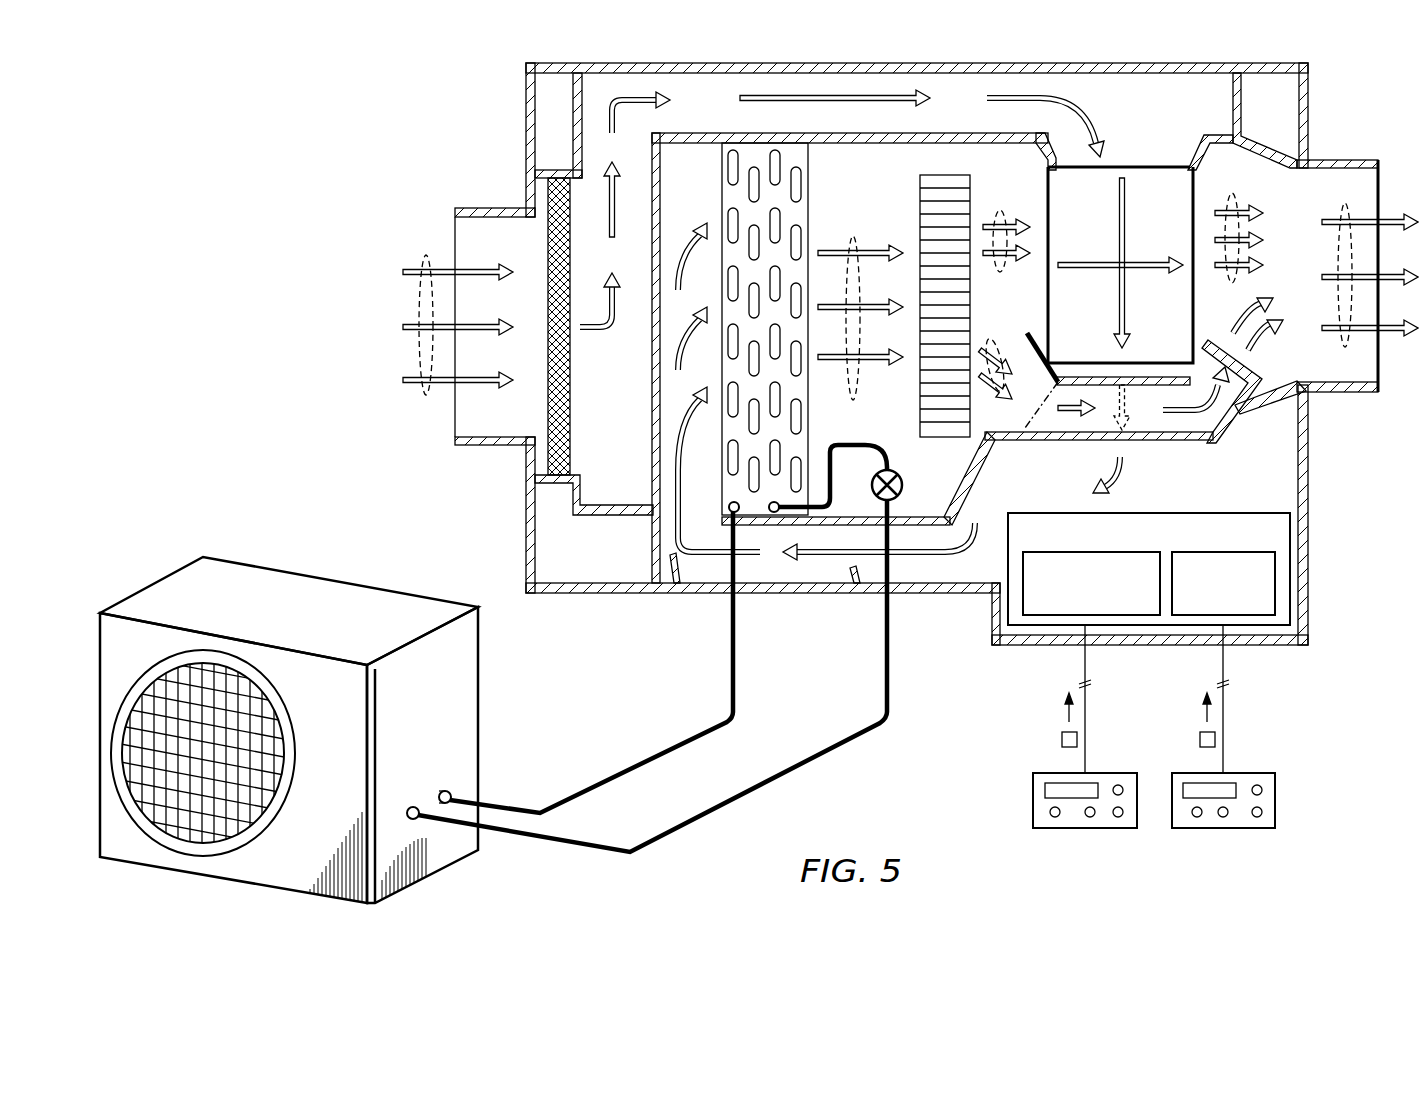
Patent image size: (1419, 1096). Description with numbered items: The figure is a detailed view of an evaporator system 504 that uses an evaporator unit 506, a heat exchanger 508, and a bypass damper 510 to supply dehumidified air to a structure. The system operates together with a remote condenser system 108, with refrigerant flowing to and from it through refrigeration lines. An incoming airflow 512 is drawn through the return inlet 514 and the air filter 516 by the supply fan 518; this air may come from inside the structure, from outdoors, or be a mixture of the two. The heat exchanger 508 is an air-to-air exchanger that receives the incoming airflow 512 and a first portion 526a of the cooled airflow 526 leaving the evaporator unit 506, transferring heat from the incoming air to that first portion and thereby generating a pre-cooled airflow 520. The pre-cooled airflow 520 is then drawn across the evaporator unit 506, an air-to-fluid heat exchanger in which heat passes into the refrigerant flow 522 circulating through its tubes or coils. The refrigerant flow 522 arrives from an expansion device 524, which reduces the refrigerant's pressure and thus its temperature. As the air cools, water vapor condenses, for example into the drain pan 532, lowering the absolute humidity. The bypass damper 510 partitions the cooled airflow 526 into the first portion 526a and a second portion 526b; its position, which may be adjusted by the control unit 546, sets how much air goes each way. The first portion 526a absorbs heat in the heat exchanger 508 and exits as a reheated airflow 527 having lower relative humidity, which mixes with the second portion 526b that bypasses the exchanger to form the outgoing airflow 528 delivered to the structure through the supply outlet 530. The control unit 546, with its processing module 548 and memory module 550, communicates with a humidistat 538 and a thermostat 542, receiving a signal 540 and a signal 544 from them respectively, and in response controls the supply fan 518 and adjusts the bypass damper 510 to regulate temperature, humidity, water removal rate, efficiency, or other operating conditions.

The remote condenser system 108 is at (226, 550).
The evaporator system 504 is at (520, 130).
The evaporator unit 506 is at (808, 213).
The heat exchanger 508 is at (1175, 158).
The bypass damper 510 is at (1038, 340).
The incoming airflow 512 is at (427, 400).
The return inlet 514 is at (527, 214).
The air filter 516 is at (548, 258).
The supply fan 518 is at (920, 182).
The pre-cooled airflow 520 is at (1128, 415).
The refrigerant flow 522 is at (730, 645).
The expansion device 524 is at (902, 485).
The cooled airflow 526 is at (853, 400).
The first portion of the cooled airflow 526a is at (1003, 208).
The second portion of the cooled airflow 526b is at (1002, 340).
The reheated airflow 527 is at (1236, 195).
The outgoing airflow 528 is at (1345, 348).
The supply outlet 530 is at (1345, 160).
The drain pan 532 is at (856, 583).
The humidistat 538 is at (1033, 812).
The signal 540 is at (1062, 738).
The thermostat 542 is at (1275, 817).
The signal 544 is at (1200, 738).
The control unit 546 is at (1190, 613).
The processing module 548 is at (1065, 552).
The memory module 550 is at (1250, 552).